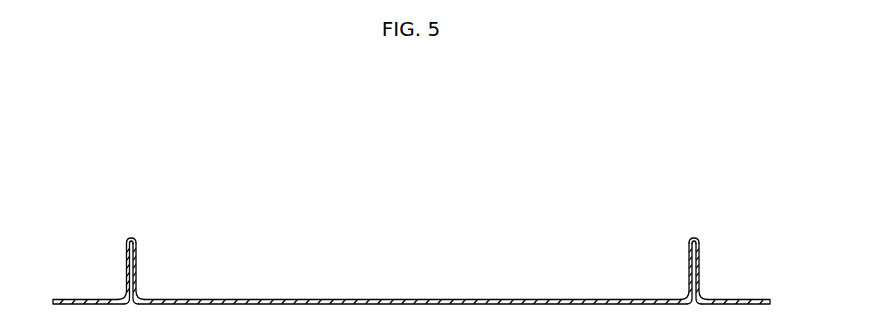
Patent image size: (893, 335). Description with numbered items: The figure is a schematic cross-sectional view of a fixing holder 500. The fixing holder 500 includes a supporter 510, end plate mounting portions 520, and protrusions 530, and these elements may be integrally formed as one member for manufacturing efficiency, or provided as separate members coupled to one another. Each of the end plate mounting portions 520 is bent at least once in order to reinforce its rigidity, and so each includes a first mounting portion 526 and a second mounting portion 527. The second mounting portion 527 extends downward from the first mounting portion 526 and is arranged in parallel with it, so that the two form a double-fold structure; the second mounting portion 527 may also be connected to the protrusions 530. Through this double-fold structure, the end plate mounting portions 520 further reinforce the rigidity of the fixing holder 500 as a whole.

The fixing holder 500 is at (411, 189).
The supporter 510 is at (385, 299).
The end plate mounting portion 520 is at (83, 197).
The first mounting portion 526 is at (137, 246).
The second mounting portion 527 is at (126, 246).
The protrusion 530 is at (73, 299).